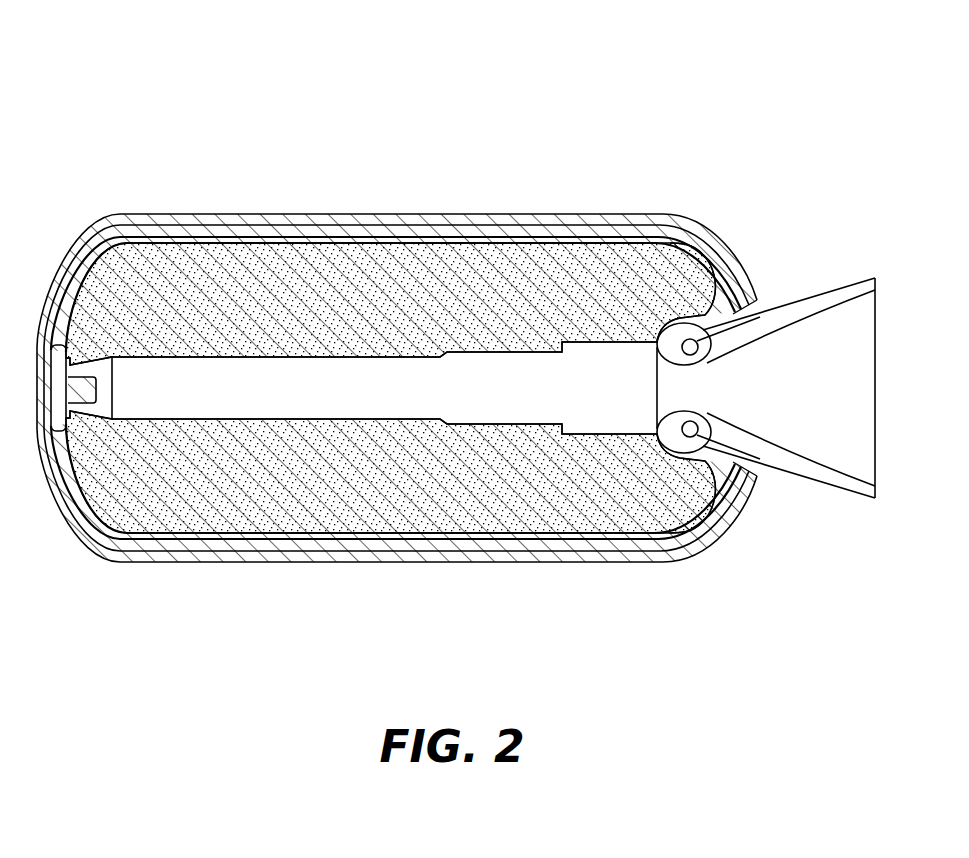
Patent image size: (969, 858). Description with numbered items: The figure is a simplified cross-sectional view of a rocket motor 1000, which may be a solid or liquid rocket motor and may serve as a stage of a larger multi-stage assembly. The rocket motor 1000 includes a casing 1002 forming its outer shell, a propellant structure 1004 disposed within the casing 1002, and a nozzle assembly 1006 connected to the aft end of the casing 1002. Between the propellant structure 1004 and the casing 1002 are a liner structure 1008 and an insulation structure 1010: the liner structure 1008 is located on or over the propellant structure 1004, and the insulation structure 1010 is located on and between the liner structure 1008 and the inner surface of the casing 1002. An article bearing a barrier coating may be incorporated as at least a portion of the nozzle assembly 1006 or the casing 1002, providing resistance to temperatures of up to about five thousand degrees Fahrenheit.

The rocket motor 1000 is at (503, 165).
The casing 1002 is at (128, 210).
The insulation structure 1010 is at (243, 224).
The liner structure 1008 is at (318, 240).
The propellant structure 1004 is at (456, 540).
The nozzle assembly 1006 is at (815, 297).